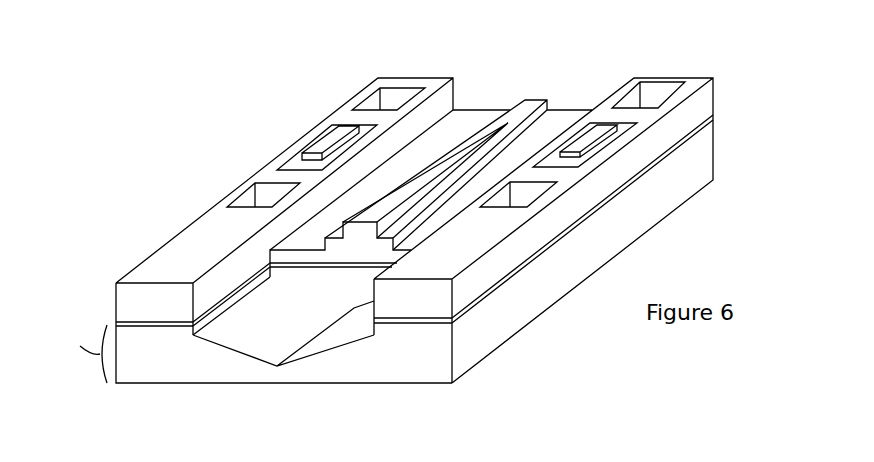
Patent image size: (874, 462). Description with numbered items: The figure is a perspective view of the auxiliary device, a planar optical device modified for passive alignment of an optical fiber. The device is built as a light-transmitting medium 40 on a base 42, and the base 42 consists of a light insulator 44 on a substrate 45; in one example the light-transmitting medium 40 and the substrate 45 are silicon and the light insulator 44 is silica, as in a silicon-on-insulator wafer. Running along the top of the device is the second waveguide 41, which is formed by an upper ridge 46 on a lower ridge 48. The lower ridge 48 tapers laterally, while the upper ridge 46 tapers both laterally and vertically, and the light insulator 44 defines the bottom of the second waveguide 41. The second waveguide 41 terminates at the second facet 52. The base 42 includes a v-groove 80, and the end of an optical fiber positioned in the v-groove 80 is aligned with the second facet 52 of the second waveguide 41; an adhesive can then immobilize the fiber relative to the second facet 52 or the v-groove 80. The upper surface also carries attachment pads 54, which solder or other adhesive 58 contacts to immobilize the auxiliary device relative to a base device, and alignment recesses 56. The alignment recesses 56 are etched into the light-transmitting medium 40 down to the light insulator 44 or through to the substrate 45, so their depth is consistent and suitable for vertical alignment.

The light-transmitting medium 40 is at (473, 123).
The second waveguide 41 is at (334, 214).
The base 42 is at (253, 333).
The light insulator 44 is at (407, 323).
The substrate 45 is at (370, 363).
The upper ridge 46 is at (382, 202).
The lower ridge 48 is at (530, 103).
The second facet 52 is at (362, 243).
The attachment pad 54 is at (325, 142).
The alignment recess 56 is at (241, 200).
The solder or other adhesive 58 is at (527, 190).
The v-groove 80 is at (287, 318).